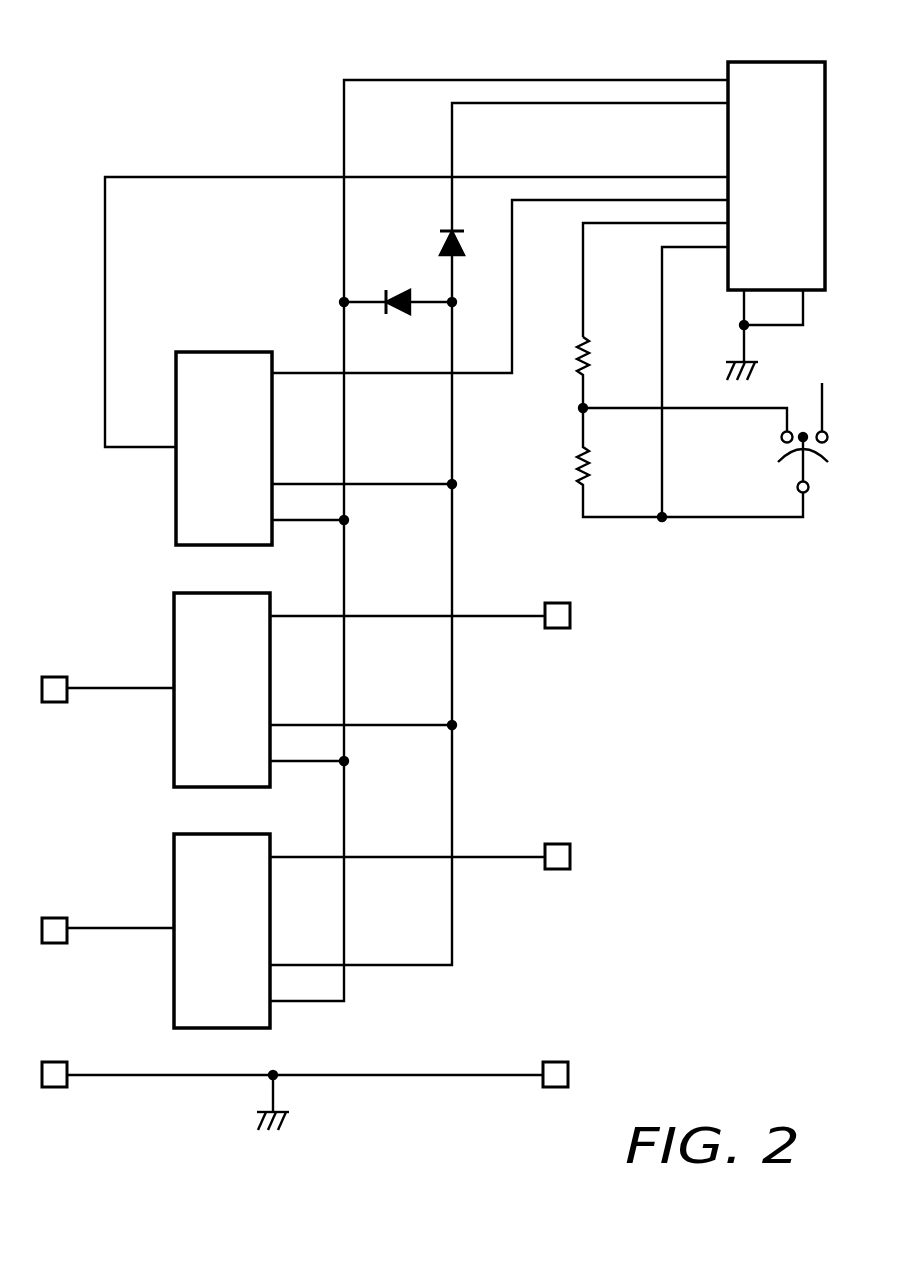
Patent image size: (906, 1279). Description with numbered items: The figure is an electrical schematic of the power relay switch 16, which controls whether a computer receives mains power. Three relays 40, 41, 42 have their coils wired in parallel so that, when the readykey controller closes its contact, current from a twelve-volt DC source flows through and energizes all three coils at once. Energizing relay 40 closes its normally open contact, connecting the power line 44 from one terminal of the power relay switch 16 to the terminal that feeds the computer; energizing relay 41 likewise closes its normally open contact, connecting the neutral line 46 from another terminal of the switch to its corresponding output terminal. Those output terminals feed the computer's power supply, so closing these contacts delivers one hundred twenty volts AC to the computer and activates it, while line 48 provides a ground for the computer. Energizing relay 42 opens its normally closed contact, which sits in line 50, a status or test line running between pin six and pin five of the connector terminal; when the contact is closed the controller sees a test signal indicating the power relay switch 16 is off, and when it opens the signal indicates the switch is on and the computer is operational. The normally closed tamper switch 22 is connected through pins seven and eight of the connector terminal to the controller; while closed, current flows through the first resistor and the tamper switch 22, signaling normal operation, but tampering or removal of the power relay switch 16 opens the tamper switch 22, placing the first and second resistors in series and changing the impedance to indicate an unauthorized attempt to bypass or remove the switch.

The power relay switch 16 is at (187, 133).
The tamper switch 22 is at (813, 461).
The relay 40 is at (184, 604).
The relay 41 is at (184, 845).
The relay 42 is at (186, 363).
The power line 44 is at (98, 688).
The neutral line 46 is at (98, 928).
The line 48 is at (98, 1075).
The line 50 is at (312, 177).